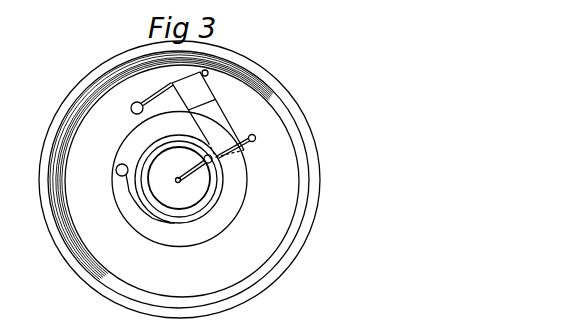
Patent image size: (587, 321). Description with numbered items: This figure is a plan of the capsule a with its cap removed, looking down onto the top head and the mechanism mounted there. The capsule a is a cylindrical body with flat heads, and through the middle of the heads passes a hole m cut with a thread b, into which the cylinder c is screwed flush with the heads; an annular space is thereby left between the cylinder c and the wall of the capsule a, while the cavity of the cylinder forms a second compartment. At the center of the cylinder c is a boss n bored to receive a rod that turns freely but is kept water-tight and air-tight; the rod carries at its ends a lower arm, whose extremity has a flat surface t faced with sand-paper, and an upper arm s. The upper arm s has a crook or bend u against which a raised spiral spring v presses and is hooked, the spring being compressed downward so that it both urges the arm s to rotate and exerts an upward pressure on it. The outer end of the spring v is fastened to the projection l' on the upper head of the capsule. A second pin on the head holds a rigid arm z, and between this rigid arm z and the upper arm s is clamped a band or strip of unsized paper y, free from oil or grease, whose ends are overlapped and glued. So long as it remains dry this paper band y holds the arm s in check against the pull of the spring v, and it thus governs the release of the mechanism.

The capsule a is at (322, 200).
The thread b is at (178, 179).
The cylinder c is at (179, 179).
The hole m is at (116, 196).
The spiral spring v is at (179, 178).
The crook or bend u is at (194, 166).
The projection l' is at (144, 183).
The flat surface t is at (136, 97).
The rigid arm z is at (157, 91).
The band or strip of unsized paper y is at (208, 113).
The boss n is at (202, 111).
The upper arm s is at (238, 147).